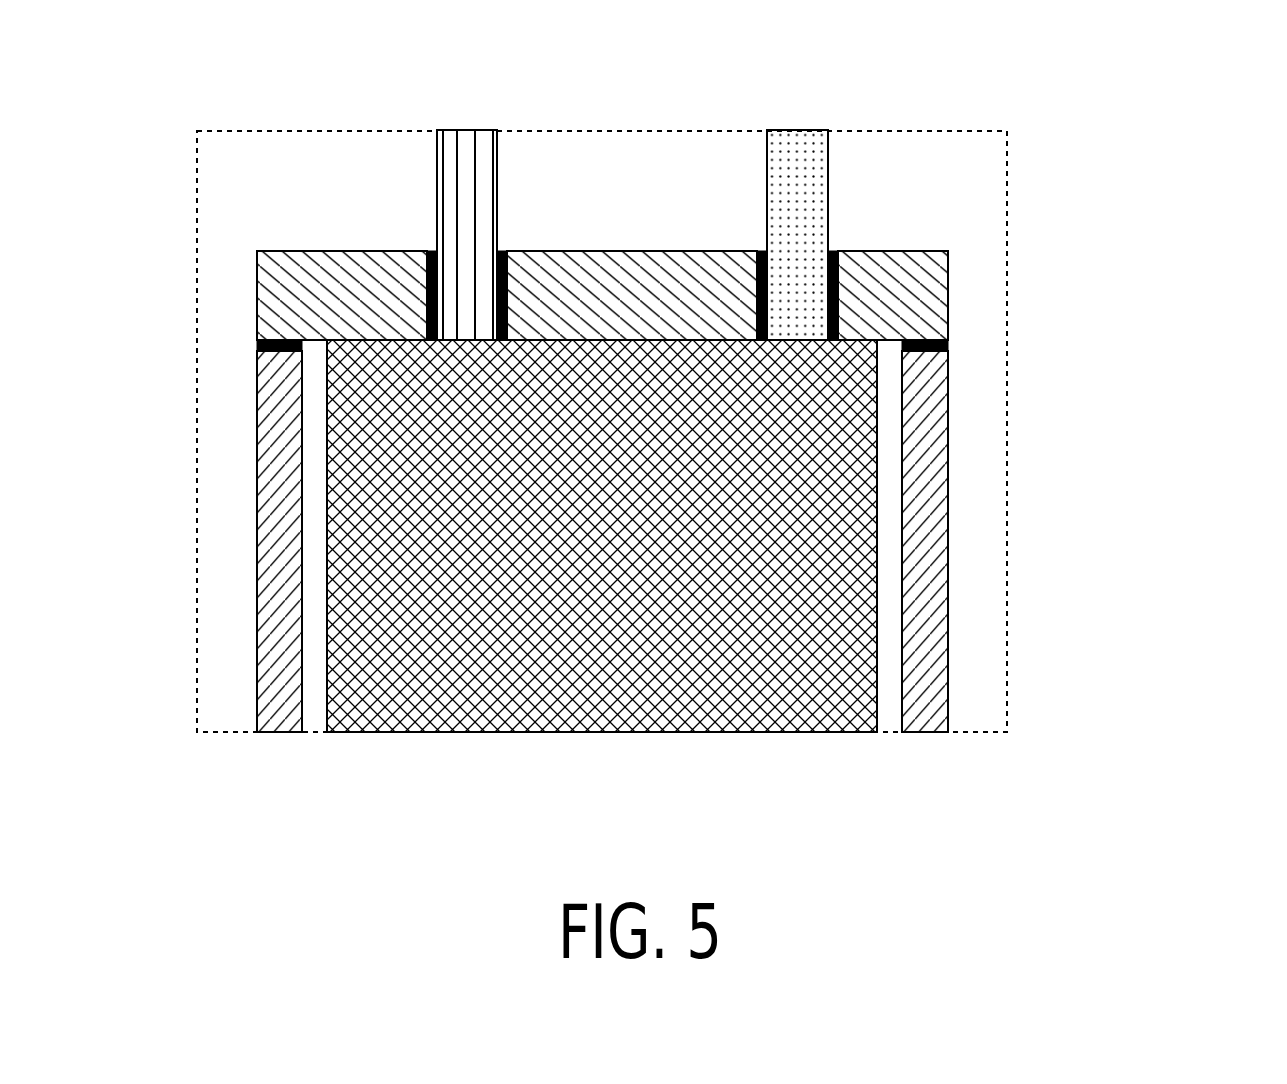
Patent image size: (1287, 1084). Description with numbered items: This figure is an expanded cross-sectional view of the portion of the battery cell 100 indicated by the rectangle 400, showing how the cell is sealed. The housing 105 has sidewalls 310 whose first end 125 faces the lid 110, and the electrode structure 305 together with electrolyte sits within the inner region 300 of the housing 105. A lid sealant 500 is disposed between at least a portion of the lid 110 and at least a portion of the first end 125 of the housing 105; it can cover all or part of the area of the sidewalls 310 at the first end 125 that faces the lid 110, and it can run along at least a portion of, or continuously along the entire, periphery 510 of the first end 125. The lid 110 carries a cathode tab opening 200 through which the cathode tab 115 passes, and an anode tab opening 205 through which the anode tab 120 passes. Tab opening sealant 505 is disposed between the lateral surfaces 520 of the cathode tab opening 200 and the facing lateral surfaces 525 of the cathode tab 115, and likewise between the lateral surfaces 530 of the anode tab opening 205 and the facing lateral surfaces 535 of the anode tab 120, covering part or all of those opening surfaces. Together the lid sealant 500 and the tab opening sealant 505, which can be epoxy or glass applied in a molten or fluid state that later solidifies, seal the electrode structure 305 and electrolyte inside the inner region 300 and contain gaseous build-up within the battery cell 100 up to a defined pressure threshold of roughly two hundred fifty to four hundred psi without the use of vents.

The battery cell 100 is at (653, 387).
The housing 105 is at (948, 495).
The lid 110 is at (948, 290).
The cathode tab 115 is at (828, 153).
The anode tab 120 is at (497, 155).
The first end 125 is at (282, 354).
The cathode tab opening 200 is at (841, 248).
The anode tab opening 205 is at (511, 248).
The inner region 300 is at (308, 626).
The electrode structure 305 is at (637, 593).
The sidewalls 310 is at (280, 668).
The rectangle 400 is at (197, 475).
The lid sealant 500 is at (254, 345).
The tab opening sealant 505 is at (431, 251).
The periphery 510 is at (255, 354).
The lateral surfaces 520 is at (755, 302).
The lateral surfaces 525 is at (773, 305).
The lateral surfaces 530 is at (426, 305).
The lateral surfaces 535 is at (445, 305).